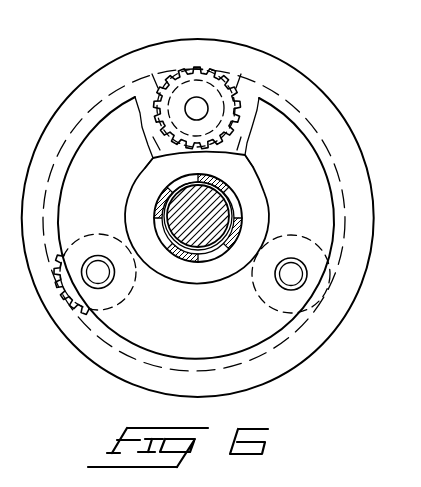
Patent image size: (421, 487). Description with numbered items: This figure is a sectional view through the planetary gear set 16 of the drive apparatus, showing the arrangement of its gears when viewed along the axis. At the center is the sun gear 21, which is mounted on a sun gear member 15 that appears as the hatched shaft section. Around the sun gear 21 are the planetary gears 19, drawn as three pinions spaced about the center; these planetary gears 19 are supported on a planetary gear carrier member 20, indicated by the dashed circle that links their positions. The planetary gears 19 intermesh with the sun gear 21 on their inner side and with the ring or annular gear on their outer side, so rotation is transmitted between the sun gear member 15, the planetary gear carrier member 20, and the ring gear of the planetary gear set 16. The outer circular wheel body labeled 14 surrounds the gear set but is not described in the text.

The wheel body 14 is at (240, 48).
The sun gear member 15 is at (222, 249).
The planetary gear set 16 is at (356, 127).
The planetary gears 19 is at (193, 66).
The planetary gear carrier member 20 is at (337, 219).
The sun gear 21 is at (266, 209).